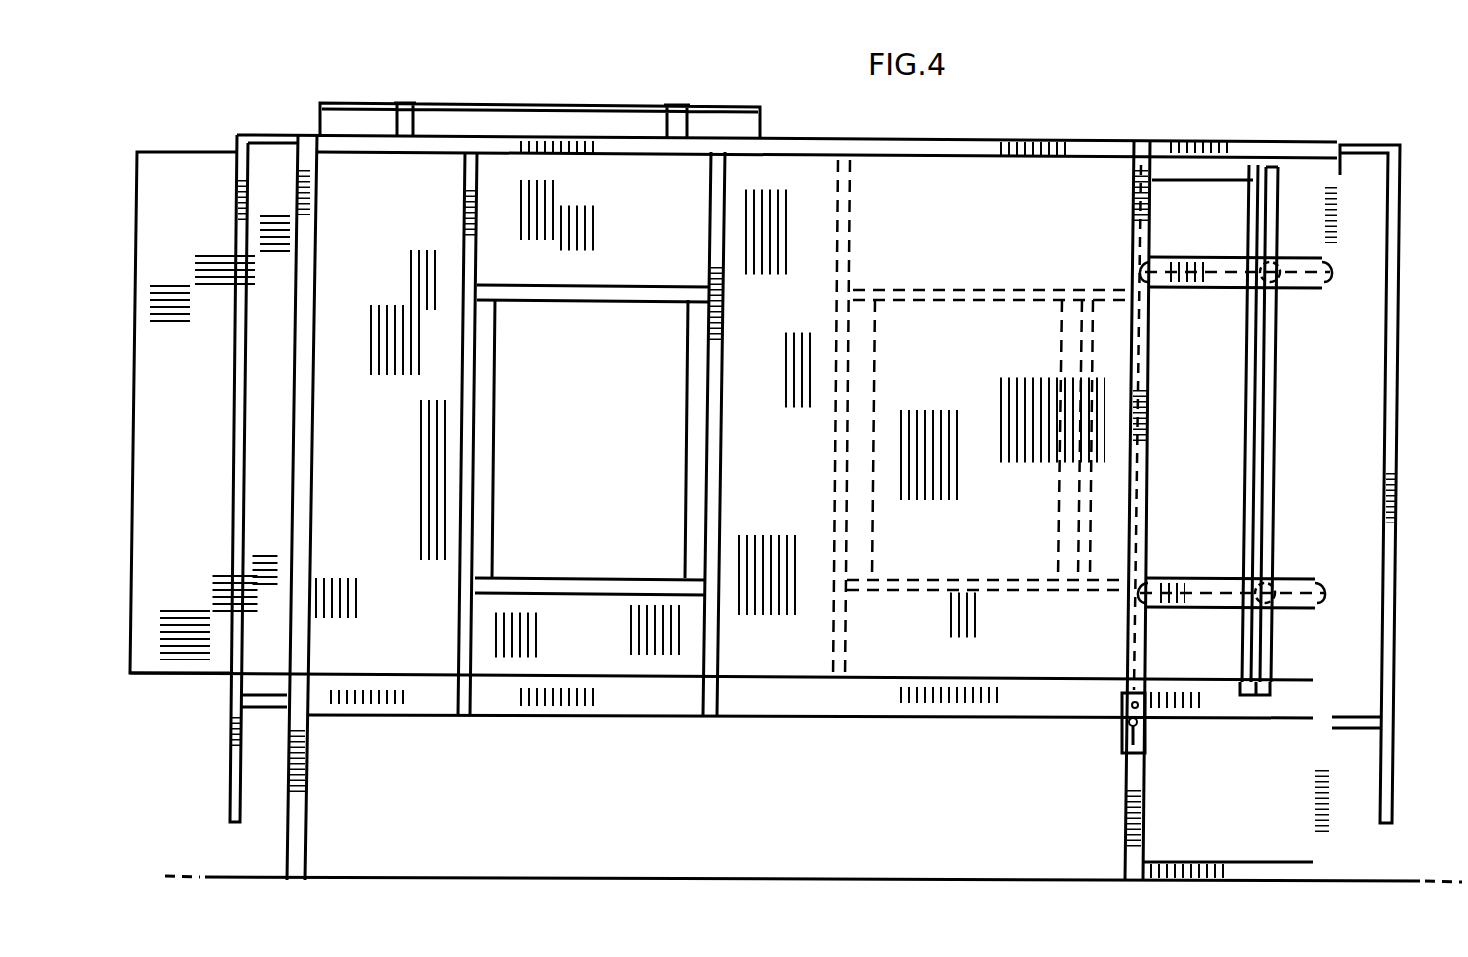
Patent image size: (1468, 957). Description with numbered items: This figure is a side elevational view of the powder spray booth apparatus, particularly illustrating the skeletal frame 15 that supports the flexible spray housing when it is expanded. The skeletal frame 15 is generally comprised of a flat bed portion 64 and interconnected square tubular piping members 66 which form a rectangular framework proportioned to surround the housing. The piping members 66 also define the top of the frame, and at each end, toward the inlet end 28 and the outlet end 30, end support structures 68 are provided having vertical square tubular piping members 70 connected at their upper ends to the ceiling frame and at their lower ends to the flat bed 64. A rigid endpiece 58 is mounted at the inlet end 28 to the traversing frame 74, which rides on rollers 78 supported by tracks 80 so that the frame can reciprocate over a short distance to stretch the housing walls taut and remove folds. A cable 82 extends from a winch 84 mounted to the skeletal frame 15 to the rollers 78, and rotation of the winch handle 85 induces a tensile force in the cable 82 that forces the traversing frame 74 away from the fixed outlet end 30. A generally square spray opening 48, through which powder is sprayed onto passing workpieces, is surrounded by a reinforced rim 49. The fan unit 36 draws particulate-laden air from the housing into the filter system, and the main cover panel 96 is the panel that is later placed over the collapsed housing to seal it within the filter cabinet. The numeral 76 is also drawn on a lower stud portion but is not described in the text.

The skeletal frame 15 is at (1082, 100).
The inlet end 28 is at (1345, 173).
The outlet end 30 is at (296, 456).
The fan unit 36 is at (203, 128).
The spray openings 48 is at (595, 453).
The reinforced rims 49 is at (593, 586).
The endpiece 58 is at (1265, 415).
The flat bed portion 64 is at (802, 698).
The square tubular piping members 66 is at (338, 181).
The end support structures 68 is at (224, 760).
The vertical square tubular piping members 70 is at (233, 557).
The traversing frame 74 is at (1250, 447).
The lower stud portion 76 is at (301, 765).
The rollers 78 is at (1262, 292).
The tracks 80 is at (1190, 278).
The cable 82 is at (1333, 593).
The winch 84 is at (1110, 742).
The winch handle 85 is at (1146, 748).
The main cover panel 96 is at (481, 82).